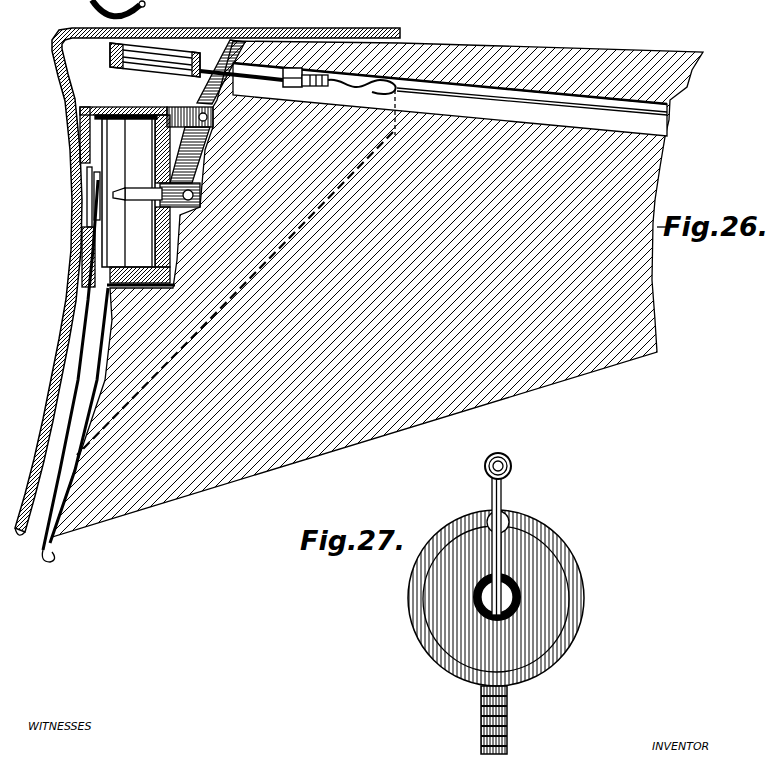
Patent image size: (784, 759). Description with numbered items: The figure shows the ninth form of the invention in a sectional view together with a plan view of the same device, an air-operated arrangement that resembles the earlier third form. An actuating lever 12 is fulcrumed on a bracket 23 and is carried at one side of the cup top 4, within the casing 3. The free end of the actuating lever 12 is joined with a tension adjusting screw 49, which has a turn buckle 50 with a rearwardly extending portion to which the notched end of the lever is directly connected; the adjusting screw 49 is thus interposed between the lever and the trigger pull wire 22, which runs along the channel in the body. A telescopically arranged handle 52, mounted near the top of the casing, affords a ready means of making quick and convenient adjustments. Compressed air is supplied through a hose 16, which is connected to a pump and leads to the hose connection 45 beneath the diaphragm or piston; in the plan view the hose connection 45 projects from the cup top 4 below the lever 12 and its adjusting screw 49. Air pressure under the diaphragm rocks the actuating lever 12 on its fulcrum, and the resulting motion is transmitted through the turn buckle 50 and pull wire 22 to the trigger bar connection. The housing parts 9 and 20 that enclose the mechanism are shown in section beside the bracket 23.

In FIG. 26, the casing shell 3 is at (80, 124).
In FIG. 26, the cup top 4 is at (168, 224).
In FIG. 27, the cup top 4 is at (556, 575).
In FIG. 26, the bolt plunger 9 is at (137, 194).
In FIG. 27, the bolt plunger 9 is at (509, 596).
In FIG. 26, the actuating lever 12 is at (207, 144).
In FIG. 27, the actuating lever 12 is at (490, 501).
In FIG. 26, the hose 16 is at (38, 562).
In FIG. 26, the bottom plate 20 is at (158, 259).
In FIG. 26, the trigger pull wire 22 is at (393, 94).
In FIG. 26, the bracket 23 is at (207, 116).
In FIG. 27, the hose connection 45 is at (481, 695).
In FIG. 26, the tension adjusting screw 49 is at (341, 79).
In FIG. 27, the tension adjusting screw 49 is at (510, 463).
In FIG. 26, the turn buckle 50 is at (291, 67).
In FIG. 26, the telescopically arranged handle 52 is at (140, 74).